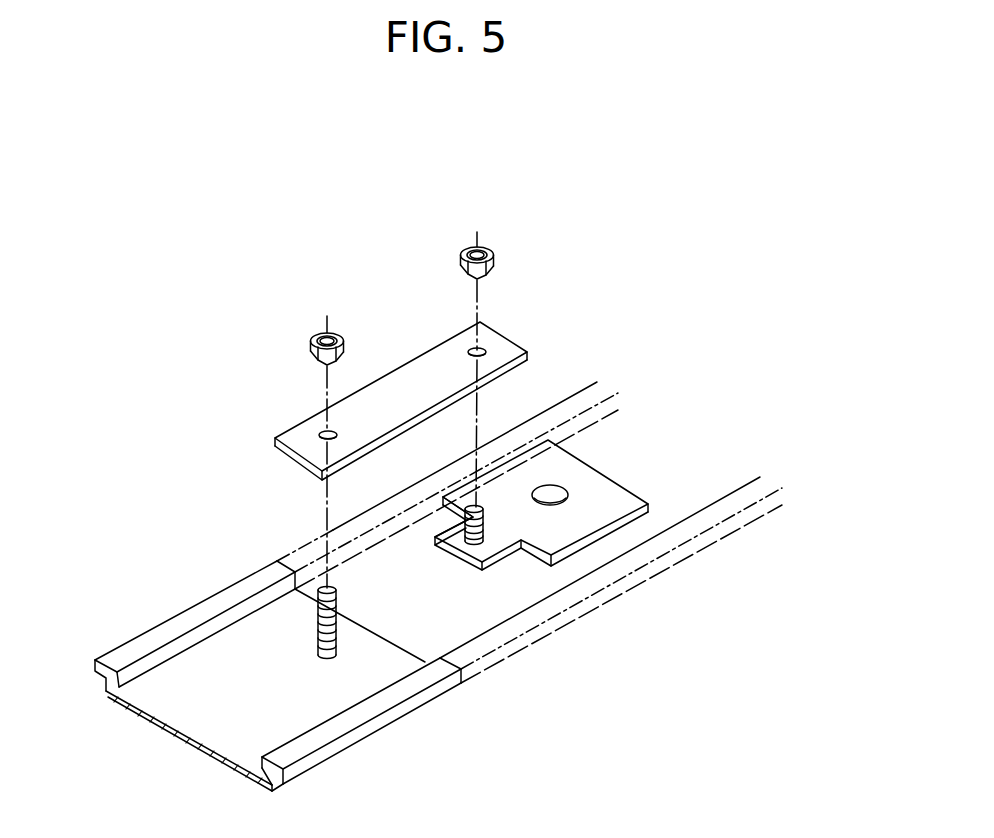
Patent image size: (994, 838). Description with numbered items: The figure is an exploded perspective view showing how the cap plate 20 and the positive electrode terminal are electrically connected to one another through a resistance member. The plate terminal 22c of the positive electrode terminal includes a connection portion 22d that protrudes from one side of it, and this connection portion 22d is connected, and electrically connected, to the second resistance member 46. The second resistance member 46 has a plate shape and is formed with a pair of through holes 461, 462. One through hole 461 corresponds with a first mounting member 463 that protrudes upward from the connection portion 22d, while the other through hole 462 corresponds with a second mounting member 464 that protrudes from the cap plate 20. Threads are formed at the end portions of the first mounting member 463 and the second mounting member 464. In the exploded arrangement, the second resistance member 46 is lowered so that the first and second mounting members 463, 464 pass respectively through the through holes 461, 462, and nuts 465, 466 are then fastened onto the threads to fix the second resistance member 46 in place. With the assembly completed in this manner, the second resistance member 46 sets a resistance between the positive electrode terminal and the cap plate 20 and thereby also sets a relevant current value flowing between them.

The cap plate 20 is at (227, 713).
The plate terminal 22c is at (588, 515).
The connection portion 22d is at (497, 558).
The second resistance member 46 is at (425, 372).
The through hole 461 is at (480, 348).
The through hole 462 is at (323, 430).
The first mounting member 463 is at (466, 538).
The second mounting member 464 is at (337, 645).
The nut 465 is at (464, 248).
The nut 466 is at (317, 332).